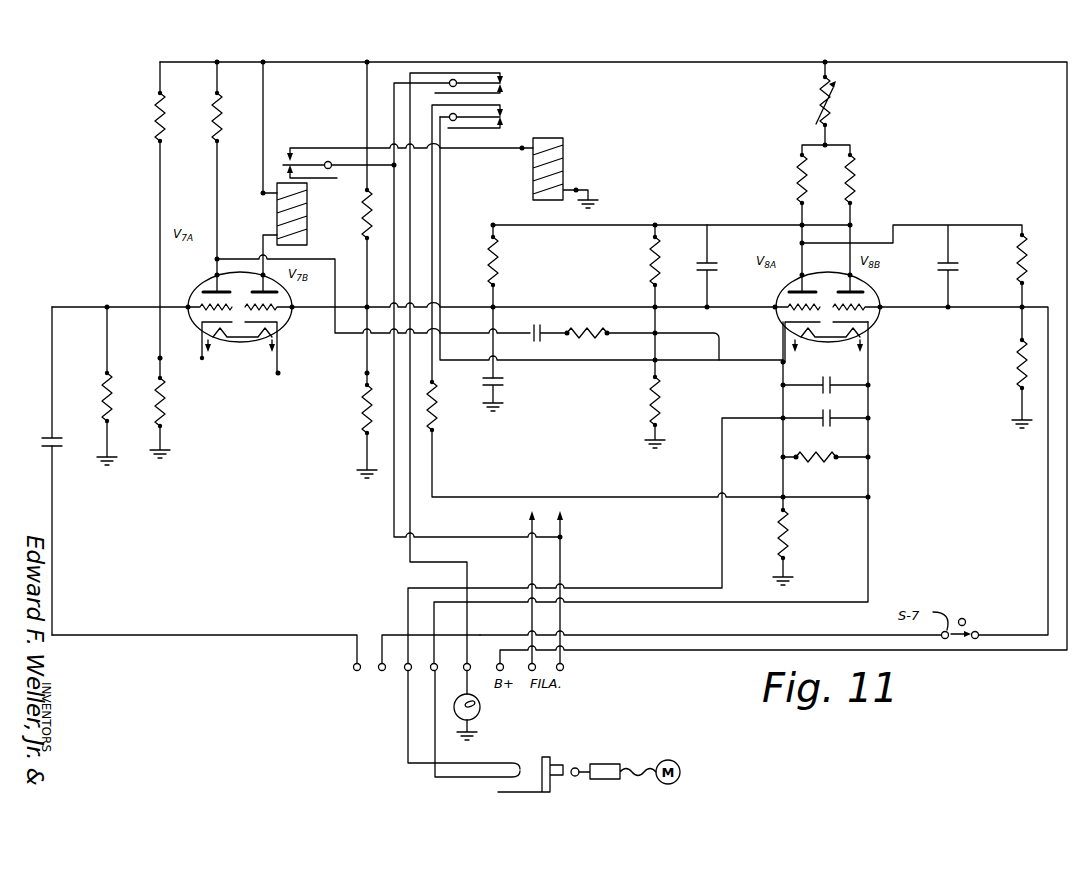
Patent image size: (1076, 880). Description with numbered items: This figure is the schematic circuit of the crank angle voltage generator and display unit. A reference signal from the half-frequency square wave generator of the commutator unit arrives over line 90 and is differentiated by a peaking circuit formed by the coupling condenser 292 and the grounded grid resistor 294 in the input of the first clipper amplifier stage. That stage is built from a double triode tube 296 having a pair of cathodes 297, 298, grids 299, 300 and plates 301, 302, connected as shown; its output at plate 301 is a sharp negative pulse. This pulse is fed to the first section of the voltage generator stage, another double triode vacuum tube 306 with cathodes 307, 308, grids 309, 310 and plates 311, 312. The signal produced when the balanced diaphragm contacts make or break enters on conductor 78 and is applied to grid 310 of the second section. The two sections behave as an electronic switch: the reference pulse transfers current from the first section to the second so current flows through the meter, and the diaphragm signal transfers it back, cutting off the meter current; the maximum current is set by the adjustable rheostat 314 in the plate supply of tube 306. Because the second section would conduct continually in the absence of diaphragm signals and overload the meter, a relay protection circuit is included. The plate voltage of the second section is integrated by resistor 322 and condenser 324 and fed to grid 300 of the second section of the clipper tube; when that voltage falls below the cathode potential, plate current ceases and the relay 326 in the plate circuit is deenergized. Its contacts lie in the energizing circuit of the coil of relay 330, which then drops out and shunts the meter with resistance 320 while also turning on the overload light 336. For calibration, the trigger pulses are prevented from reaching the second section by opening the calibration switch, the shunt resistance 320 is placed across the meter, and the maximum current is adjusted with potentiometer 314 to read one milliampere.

The conductor 78 is at (388, 633).
The line 90 is at (270, 633).
The coupling condenser 292 is at (52, 436).
The grounded grid resistor 294 is at (106, 392).
The double triode tube 296 is at (237, 342).
The cathode 297 is at (203, 328).
The cathode 298 is at (278, 327).
The grid 299 is at (200, 304).
The grid 300 is at (278, 308).
The plate 301 is at (207, 289).
The plate 302 is at (277, 292).
The double triode vacuum tube 306 is at (825, 342).
The cathode 307 is at (785, 324).
The cathode 308 is at (868, 328).
The grid 309 is at (788, 305).
The grid 310 is at (867, 309).
The plate 311 is at (804, 290).
The plate 312 is at (865, 291).
The adjustable rheostat 314 is at (836, 110).
The resistance 320 is at (438, 416).
The resistor 322 is at (498, 272).
The condenser 324 is at (504, 381).
The relay 326 is at (276, 226).
The relay 330 is at (563, 138).
The overload light 336 is at (481, 713).